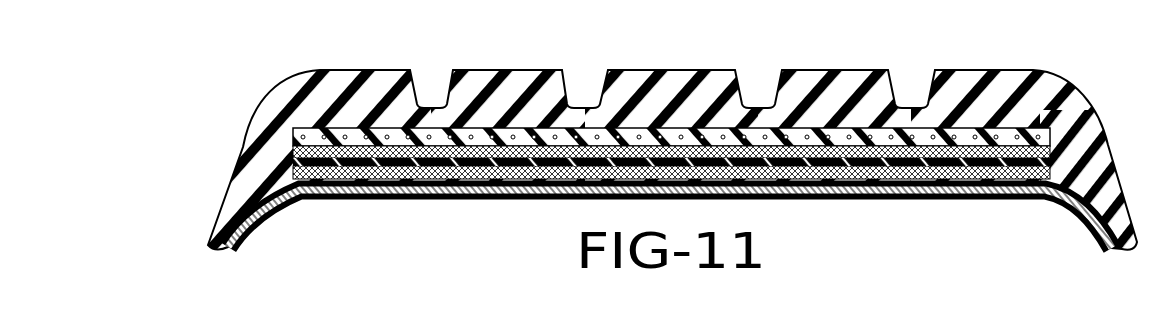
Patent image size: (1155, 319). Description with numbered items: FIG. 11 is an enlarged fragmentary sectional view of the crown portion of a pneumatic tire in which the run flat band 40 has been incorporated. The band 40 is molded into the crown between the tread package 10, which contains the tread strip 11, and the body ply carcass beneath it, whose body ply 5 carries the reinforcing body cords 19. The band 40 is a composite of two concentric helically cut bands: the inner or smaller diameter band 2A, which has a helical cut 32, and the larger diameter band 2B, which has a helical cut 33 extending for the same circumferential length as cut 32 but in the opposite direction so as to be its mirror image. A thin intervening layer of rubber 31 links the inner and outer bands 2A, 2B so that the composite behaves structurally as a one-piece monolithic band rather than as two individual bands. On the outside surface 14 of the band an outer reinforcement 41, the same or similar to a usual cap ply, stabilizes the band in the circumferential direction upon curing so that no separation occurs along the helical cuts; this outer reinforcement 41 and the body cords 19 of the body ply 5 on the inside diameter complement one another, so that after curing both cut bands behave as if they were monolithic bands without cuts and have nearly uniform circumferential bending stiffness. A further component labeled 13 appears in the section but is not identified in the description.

The inner band 2A is at (399, 185).
The larger diameter band 2B is at (464, 142).
The body ply 5 is at (902, 190).
The tread package 10 is at (864, 66).
The tread strip 11 is at (680, 75).
The carcass plies 13 is at (530, 185).
The outside surface 14 is at (534, 175).
The reinforcing cords 19 is at (474, 190).
The intervening layer of rubber 31 is at (360, 162).
The helical cut 32 is at (874, 167).
The helical cut 33 is at (814, 154).
The run flat band 40 is at (279, 149).
The outer reinforcement 41 is at (317, 130).